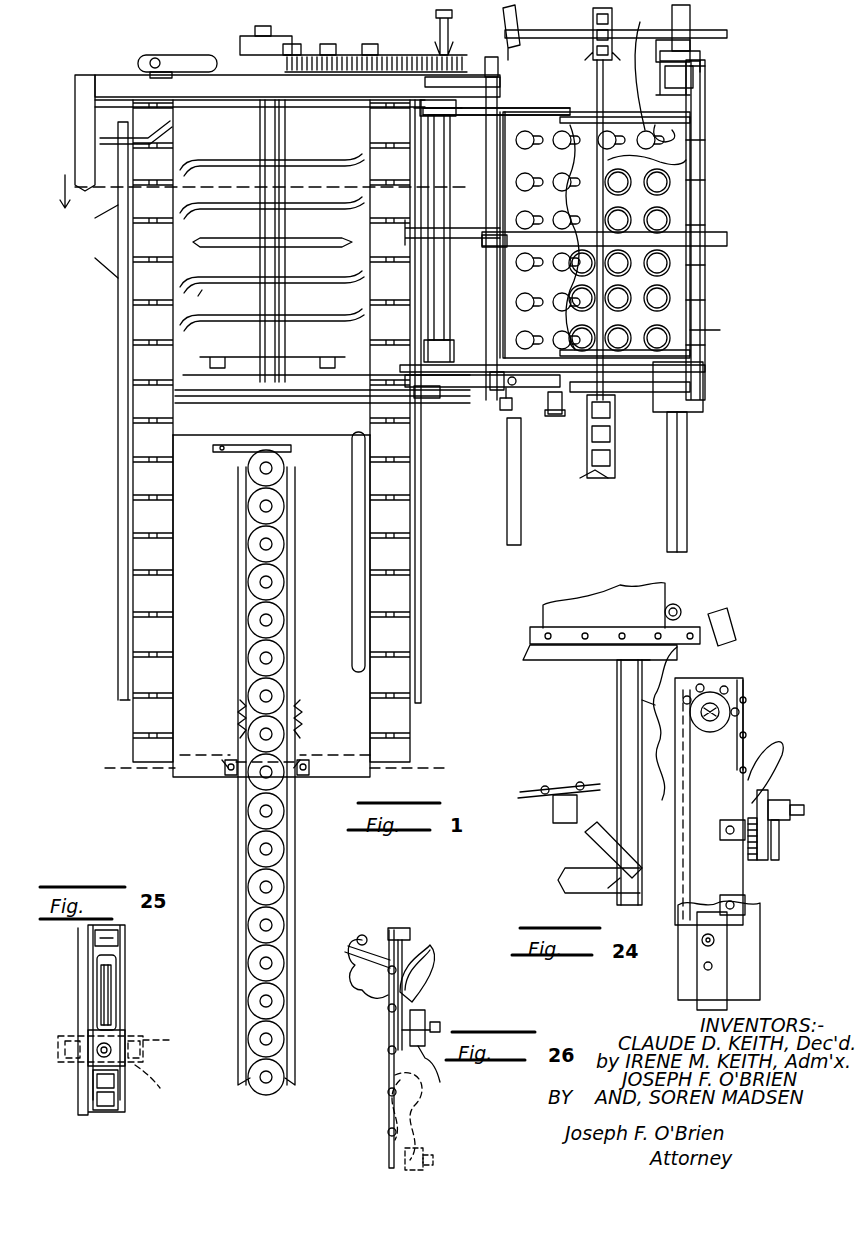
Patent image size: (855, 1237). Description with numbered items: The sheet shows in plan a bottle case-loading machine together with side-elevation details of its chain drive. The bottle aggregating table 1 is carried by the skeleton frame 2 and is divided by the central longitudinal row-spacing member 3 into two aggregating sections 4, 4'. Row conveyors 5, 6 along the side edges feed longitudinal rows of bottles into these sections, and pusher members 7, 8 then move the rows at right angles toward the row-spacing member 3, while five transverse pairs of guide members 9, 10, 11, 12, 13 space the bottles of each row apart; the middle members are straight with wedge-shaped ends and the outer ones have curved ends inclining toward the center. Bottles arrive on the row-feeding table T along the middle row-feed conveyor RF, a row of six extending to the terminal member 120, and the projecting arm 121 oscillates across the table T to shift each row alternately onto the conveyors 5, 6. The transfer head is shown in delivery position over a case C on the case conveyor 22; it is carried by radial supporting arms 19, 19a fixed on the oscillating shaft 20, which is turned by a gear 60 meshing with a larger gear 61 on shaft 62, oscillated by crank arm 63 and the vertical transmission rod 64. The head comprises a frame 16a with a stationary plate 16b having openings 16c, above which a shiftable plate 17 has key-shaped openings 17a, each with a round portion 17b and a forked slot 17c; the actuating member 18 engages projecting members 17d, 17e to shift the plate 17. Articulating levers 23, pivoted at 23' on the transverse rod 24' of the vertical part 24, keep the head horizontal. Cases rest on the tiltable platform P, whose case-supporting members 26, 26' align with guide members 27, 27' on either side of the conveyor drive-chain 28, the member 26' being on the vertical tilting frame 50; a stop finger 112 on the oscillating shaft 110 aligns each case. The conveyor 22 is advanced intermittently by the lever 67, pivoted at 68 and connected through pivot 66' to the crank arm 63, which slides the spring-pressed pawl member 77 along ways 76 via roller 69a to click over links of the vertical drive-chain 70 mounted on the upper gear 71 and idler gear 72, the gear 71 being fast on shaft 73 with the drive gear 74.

In FIG. 1, the bottle aggregating table 1 is at (162, 328).
In FIG. 1, the skeleton frame 2 is at (112, 80).
In FIG. 1, the longitudinal row-spacing member 3 is at (275, 225).
In FIG. 1, the aggregating section 4 is at (272, 254).
In FIG. 1, the aggregating section 4' is at (272, 268).
In FIG. 1, the row conveyor 5 is at (142, 354).
In FIG. 1, the row conveyor 6 is at (395, 473).
In FIG. 1, the pusher member 7 is at (118, 302).
In FIG. 1, the pusher member 8 is at (420, 336).
In FIG. 1, the guide member 9 is at (215, 166).
In FIG. 1, the guide member 10 is at (206, 210).
In FIG. 1, the guide member 11 is at (255, 223).
In FIG. 1, the guide member 12 is at (210, 301).
In FIG. 1, the guide member 13 is at (205, 325).
In FIG. 1, the row-feeding table T is at (271, 760).
In FIG. 1, the row-feed conveyor RF is at (246, 565).
In FIG. 1, the terminal member 120 is at (228, 453).
In FIG. 1, the projecting arm 121 is at (356, 503).
In FIG. 1, the vertical transmission rod 64 is at (185, 54).
In FIG. 1, the pivot 66' is at (253, 28).
In FIG. 1, the crank arm 63 is at (291, 44).
In FIG. 1, the lever 67 is at (330, 44).
In FIG. 24, the lever 67 is at (776, 858).
In FIG. 25, the lever 67 is at (115, 1075).
In FIG. 26, the lever 67 is at (439, 1075).
In FIG. 1, the oscillating shaft 62 is at (376, 55).
In FIG. 1, the gear 61 is at (390, 56).
In FIG. 1, the pivot 68 is at (450, 14).
In FIG. 1, the gear 60 is at (482, 70).
In FIG. 1, the articulating lever 23 is at (534, 231).
In FIG. 1, the pivot 23' is at (609, 241).
In FIG. 1, the round portion 17b is at (638, 40).
In FIG. 1, the case conveyor 22 is at (690, 52).
In FIG. 24, the case conveyor 22 is at (542, 788).
In FIG. 1, the conveyor drive-chain 28 is at (612, 472).
In FIG. 1, the bottle-engaging slot 17c is at (660, 125).
In FIG. 1, the mounting and supporting frame 16a is at (668, 133).
In FIG. 1, the key-shaped bottle-receiving opening 17a is at (703, 143).
In FIG. 1, the stationary plate 16b is at (700, 165).
In FIG. 1, the shiftable bottle-engaging plate 17 is at (700, 194).
In FIG. 1, the tiltable case-support platform P is at (718, 214).
In FIG. 1, the projecting member 17d is at (727, 240).
In FIG. 1, the bottle-receiving opening 16c is at (700, 286).
In FIG. 1, the transverse rod 24' is at (723, 311).
In FIG. 1, the vertical part 24 is at (587, 352).
In FIG. 1, the case-supporting member 26' is at (674, 387).
In FIG. 24, the case-supporting member 26' is at (604, 621).
In FIG. 1, the conveyor guide member 27' is at (703, 482).
In FIG. 1, the conveyor guide member 27 is at (490, 487).
In FIG. 1, the case-supporting member 26 is at (486, 422).
In FIG. 1, the oscillating shaft 110 is at (490, 381).
In FIG. 1, the radial supporting arm 19 is at (456, 330).
In FIG. 1, the oscillating driven shaft 20 is at (432, 302).
In FIG. 1, the actuating member 18 is at (432, 226).
In FIG. 1, the projecting member 17e is at (486, 238).
In FIG. 1, the radial supporting arm 19a is at (472, 109).
In FIG. 24, the case C is at (680, 608).
In FIG. 24, the stop finger 112 is at (690, 615).
In FIG. 24, the drive gear 74 is at (620, 678).
In FIG. 24, the upper gear 71 is at (700, 722).
In FIG. 26, the upper gear 71 is at (380, 1022).
In FIG. 24, the vertical tilting frame 50 is at (625, 745).
In FIG. 24, the drive-chain 70 is at (688, 848).
In FIG. 25, the drive-chain 70 is at (104, 942).
In FIG. 26, the drive-chain 70 is at (390, 1052).
In FIG. 24, the shaft 73 is at (745, 712).
In FIG. 26, the shaft 73 is at (358, 992).
In FIG. 24, the pawl member 77 is at (760, 792).
In FIG. 25, the pawl member 77 is at (106, 992).
In FIG. 26, the pawl member 77 is at (408, 978).
In FIG. 24, the roller 69a is at (772, 820).
In FIG. 25, the roller 69a is at (100, 1054).
In FIG. 26, the roller 69a is at (427, 1022).
In FIG. 24, the ways 76 is at (756, 860).
In FIG. 25, the ways 76 is at (85, 1105).
In FIG. 24, the idler gear 72 is at (762, 962).